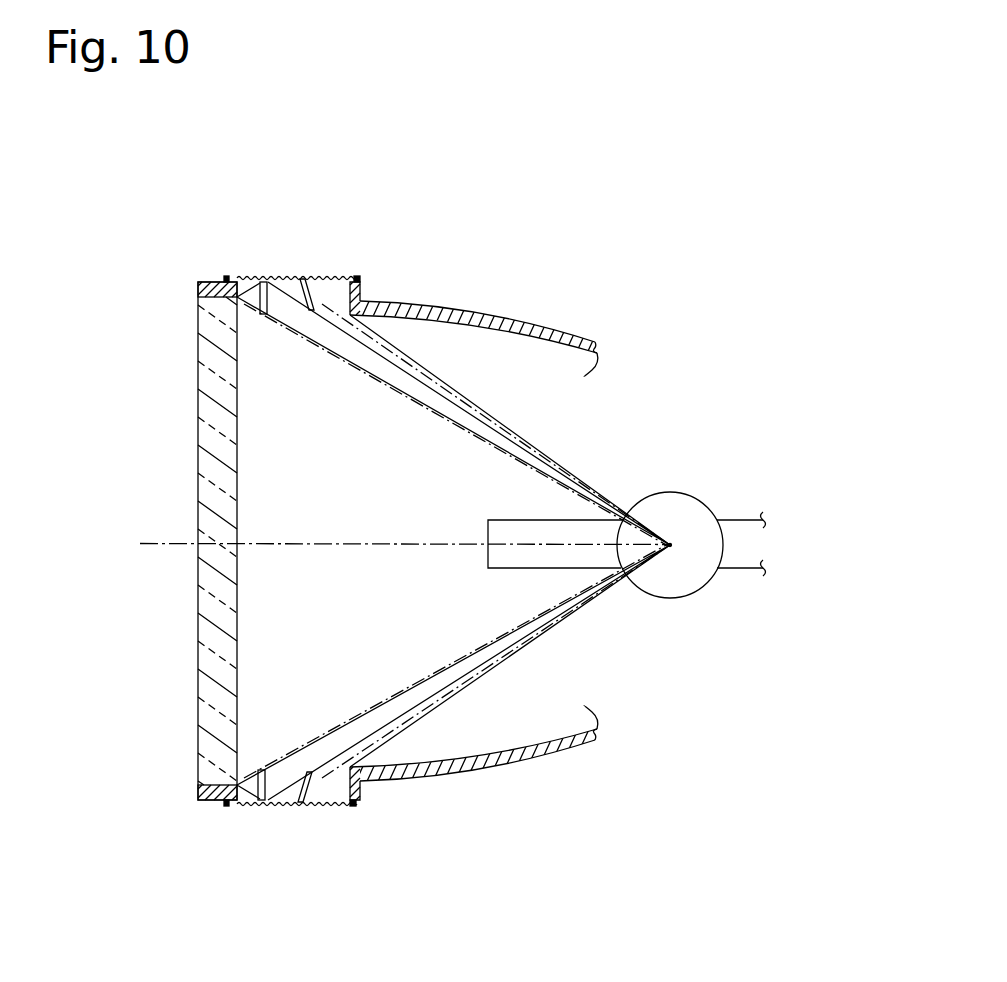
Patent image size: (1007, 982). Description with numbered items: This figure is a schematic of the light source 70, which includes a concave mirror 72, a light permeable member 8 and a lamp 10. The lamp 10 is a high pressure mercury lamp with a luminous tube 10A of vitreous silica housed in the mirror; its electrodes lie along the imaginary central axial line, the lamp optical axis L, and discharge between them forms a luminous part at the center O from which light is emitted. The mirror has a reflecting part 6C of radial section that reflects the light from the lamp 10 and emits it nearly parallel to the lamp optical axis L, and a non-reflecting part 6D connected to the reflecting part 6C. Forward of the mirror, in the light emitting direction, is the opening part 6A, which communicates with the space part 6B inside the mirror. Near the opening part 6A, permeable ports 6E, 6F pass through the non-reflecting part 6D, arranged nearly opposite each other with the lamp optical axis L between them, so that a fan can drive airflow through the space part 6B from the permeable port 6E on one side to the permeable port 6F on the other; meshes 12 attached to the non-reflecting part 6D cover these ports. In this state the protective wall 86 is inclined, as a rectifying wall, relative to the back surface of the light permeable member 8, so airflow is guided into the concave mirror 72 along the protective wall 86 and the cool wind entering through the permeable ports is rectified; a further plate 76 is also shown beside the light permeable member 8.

The light source 70 is at (592, 175).
The concave mirror 72 is at (572, 312).
The reflecting part 6C is at (458, 303).
The space part 6B is at (508, 712).
The non-reflecting part 6D is at (372, 282).
The permeable port 6E is at (327, 278).
The permeable port 6F is at (322, 806).
The opening part 6A is at (257, 433).
The light permeable member 8 is at (197, 613).
The mesh 12 is at (252, 277).
The light shielding plate 76 is at (268, 278).
The protective wall 86 is at (297, 278).
The lamp 10 is at (682, 475).
The luminous tube 10A is at (738, 520).
The light emission center O is at (672, 547).
The lamp optical axis L is at (168, 543).